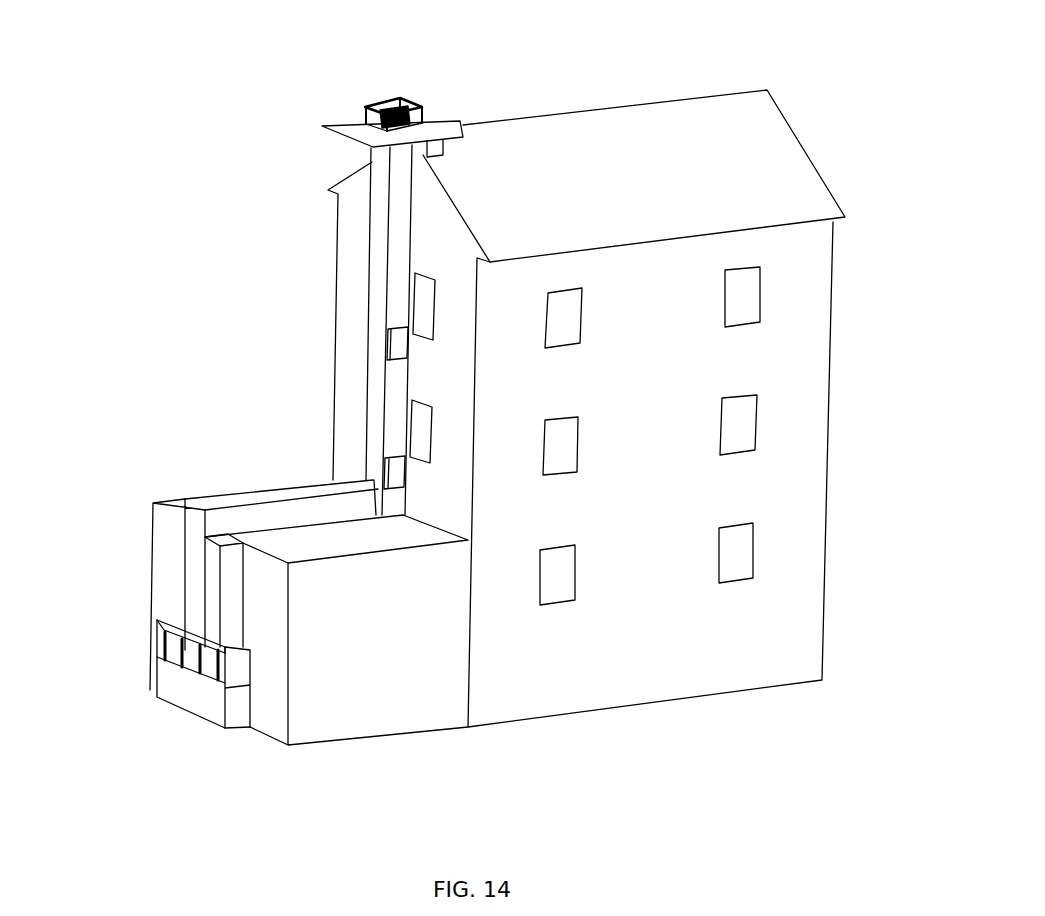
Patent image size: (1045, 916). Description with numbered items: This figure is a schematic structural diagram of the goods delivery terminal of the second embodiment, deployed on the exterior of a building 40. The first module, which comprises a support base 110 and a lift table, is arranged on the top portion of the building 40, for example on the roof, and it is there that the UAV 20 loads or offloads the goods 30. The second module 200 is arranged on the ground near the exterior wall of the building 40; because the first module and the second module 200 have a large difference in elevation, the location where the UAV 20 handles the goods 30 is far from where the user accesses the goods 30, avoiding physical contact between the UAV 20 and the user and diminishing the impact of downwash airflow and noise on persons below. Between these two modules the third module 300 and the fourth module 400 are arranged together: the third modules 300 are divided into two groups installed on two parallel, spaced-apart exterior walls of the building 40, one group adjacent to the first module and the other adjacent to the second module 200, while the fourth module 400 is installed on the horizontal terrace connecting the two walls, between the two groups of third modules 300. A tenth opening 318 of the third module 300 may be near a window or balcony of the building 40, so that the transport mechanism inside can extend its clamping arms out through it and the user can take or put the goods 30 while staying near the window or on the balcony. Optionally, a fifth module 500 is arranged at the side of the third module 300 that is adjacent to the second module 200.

The UAV 20 is at (383, 103).
The goods 30 is at (363, 120).
The support base 110 is at (440, 122).
The third module 300 is at (387, 268).
The tenth opening 318 is at (392, 347).
The fourth module 400 is at (287, 492).
The fifth module 500 is at (237, 603).
The second module 200 is at (222, 676).
The building 40 is at (792, 533).